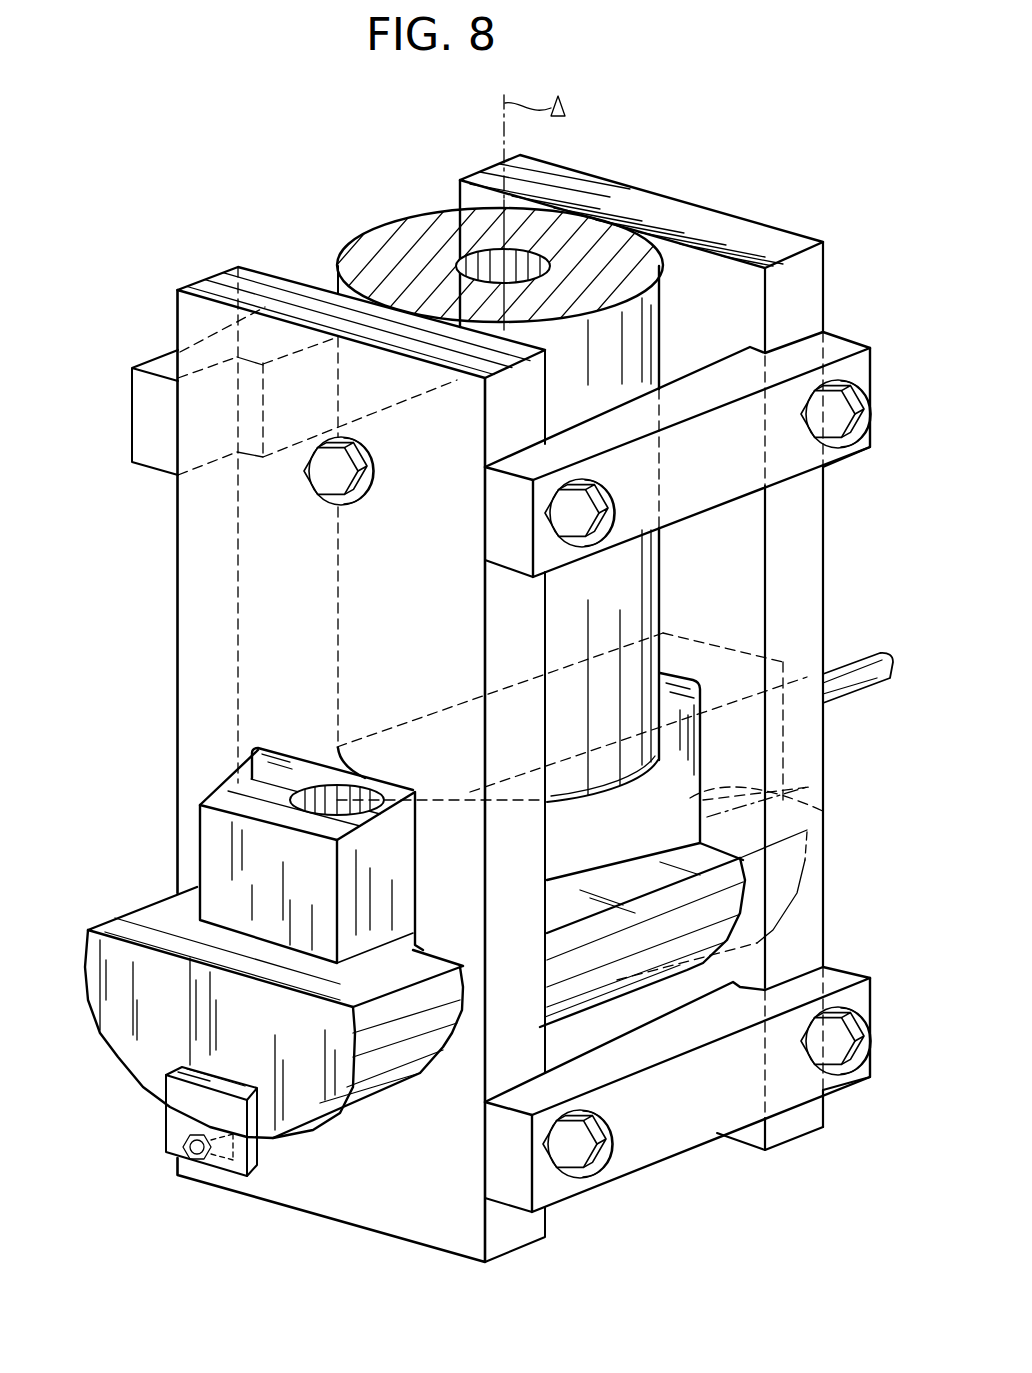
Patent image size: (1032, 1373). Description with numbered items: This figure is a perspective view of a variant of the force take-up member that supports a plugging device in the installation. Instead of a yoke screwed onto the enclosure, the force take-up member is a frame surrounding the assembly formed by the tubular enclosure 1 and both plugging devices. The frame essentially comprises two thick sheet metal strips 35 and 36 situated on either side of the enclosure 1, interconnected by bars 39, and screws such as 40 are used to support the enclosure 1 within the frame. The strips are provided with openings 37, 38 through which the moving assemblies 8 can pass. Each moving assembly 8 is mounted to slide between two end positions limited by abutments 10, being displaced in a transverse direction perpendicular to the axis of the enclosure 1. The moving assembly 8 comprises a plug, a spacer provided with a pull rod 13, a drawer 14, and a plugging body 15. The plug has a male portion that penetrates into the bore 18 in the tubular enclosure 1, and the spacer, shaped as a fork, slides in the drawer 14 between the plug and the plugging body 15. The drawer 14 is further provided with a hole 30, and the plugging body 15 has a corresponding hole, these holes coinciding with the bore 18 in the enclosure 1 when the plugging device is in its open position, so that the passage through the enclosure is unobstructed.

The tubular enclosure 1 is at (397, 247).
The bore 18 is at (498, 267).
The bars 39 is at (160, 360).
The screws 40 is at (327, 487).
The thick sheet metal strip 35 is at (195, 592).
The thick sheet metal strip 36 is at (807, 542).
The opening 37 is at (262, 772).
The hole 30 is at (332, 795).
The pull rod 13 is at (867, 683).
The drawer 14 is at (224, 833).
The opening 38 is at (700, 787).
The moving assembly 8 is at (150, 884).
The plugging body 15 is at (166, 1022).
The abutment 10 is at (176, 1140).